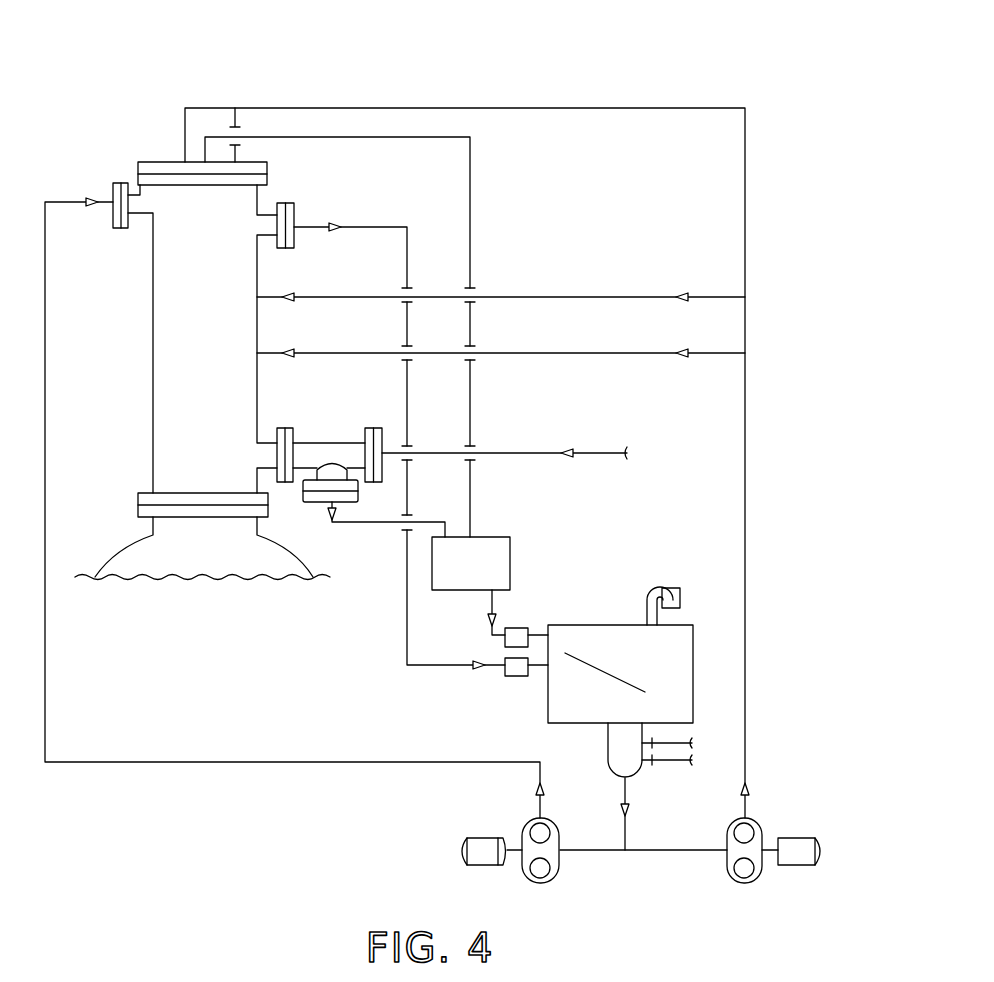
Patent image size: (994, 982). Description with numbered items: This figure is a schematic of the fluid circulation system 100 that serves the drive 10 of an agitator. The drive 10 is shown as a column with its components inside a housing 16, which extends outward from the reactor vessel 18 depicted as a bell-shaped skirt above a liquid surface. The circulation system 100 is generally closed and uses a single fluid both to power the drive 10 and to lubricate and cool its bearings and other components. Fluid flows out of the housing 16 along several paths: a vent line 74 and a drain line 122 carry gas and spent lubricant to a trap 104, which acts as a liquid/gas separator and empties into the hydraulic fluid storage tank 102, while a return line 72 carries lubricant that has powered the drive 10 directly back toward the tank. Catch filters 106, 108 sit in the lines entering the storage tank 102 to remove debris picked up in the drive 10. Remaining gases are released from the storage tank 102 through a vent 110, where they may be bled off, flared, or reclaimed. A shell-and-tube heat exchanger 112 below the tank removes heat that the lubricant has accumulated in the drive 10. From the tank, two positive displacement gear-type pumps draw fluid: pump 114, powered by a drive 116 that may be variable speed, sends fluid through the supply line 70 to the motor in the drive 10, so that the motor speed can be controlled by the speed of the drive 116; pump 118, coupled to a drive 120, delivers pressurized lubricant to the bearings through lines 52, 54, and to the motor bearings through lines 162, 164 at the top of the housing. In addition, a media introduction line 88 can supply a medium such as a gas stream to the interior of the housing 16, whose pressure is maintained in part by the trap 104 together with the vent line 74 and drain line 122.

The drive 10 is at (131, 162).
The housing 16 is at (168, 388).
The reactor vessel 18 is at (128, 548).
The line 52 is at (558, 297).
The line 54 is at (558, 353).
The supply line 70 is at (45, 295).
The return line 72 is at (370, 227).
The vent line 74 is at (330, 137).
The media introduction line 88 is at (520, 453).
The fluid circulation system 100 is at (780, 243).
The hydraulic fluid storage tank 102 is at (591, 640).
The trap 104 is at (490, 553).
The catch filter 106 is at (510, 642).
The catch filter 108 is at (515, 670).
The vent 110 is at (648, 590).
The shell-and-tube heat exchanger 112 is at (620, 762).
The positive displacement pump 114 is at (533, 822).
The drive 116 is at (480, 848).
The positive displacement pump 118 is at (752, 820).
The drive 120 is at (800, 845).
The drain line 122 is at (372, 525).
The line 162 is at (207, 108).
The line 164 is at (236, 121).